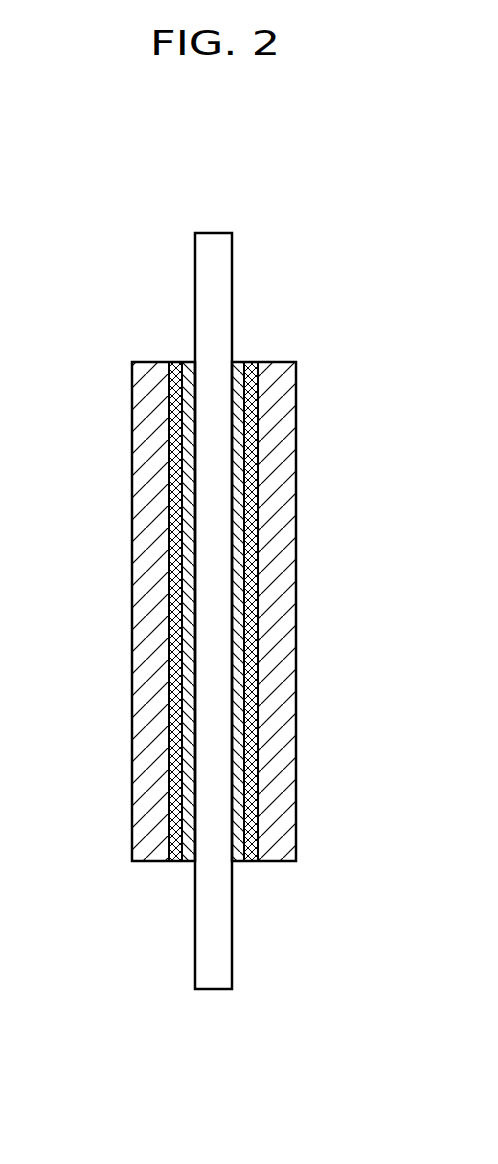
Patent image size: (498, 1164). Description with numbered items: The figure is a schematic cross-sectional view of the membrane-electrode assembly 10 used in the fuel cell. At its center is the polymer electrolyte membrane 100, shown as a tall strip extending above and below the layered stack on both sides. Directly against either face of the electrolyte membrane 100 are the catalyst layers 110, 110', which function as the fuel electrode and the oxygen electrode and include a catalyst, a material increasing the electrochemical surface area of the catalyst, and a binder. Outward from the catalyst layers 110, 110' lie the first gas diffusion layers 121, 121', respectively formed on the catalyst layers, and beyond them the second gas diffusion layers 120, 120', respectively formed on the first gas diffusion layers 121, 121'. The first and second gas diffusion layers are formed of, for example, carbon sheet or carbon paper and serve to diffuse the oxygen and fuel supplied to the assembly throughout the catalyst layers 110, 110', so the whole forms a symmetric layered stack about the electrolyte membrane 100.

The membrane-electrode assembly 10 is at (230, 576).
The electrolyte membrane 100 is at (214, 238).
The catalyst layer 110 is at (168, 650).
The catalyst layer 110' is at (262, 650).
The second gas diffusion layer 120 is at (112, 612).
The second gas diffusion layer 120' is at (317, 612).
The first gas diffusion layer 121 is at (154, 573).
The first gas diffusion layer 121' is at (273, 573).